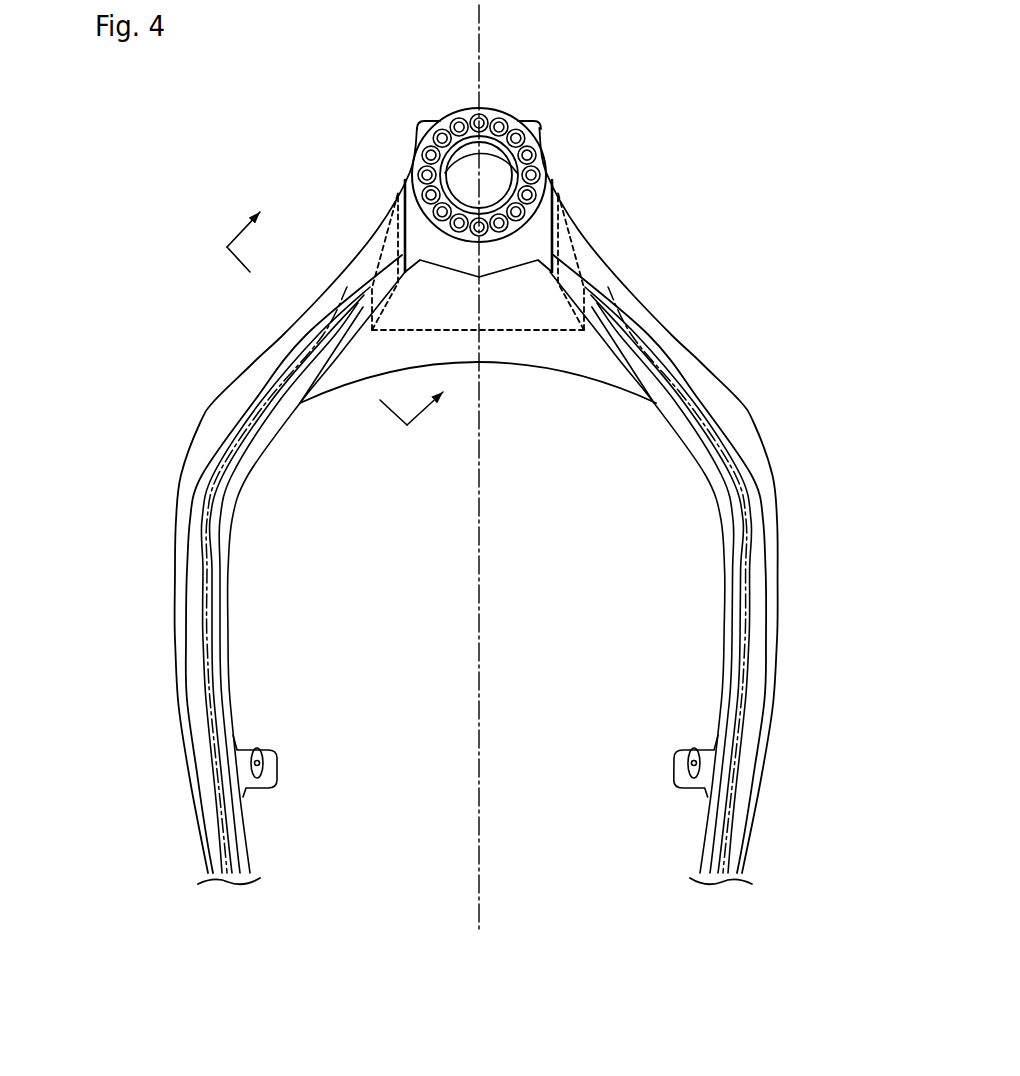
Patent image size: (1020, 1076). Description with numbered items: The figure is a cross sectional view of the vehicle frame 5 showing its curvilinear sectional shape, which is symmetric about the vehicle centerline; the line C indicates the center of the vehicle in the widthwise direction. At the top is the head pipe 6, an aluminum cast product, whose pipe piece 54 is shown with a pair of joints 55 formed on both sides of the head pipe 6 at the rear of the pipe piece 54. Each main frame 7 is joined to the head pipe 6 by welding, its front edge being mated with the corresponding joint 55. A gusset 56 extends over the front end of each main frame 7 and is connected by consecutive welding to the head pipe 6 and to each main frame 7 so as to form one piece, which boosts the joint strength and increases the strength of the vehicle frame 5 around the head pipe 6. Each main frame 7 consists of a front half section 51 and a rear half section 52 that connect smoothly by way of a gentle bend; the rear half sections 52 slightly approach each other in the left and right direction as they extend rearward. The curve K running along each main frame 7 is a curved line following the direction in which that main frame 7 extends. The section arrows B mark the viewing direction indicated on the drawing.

The vehicle frame 5 is at (706, 90).
The head pipe 6 is at (512, 112).
The main frame 7 is at (190, 402).
The front half section 51 is at (320, 293).
The rear half section 52 is at (182, 747).
The pipe piece 54 is at (462, 110).
The joint 55 is at (383, 237).
The gusset 56 is at (520, 372).
The curve K is at (220, 497).
The section arrows B is at (324, 335).
The center of the vehicle in the widthwise direction C is at (482, 668).